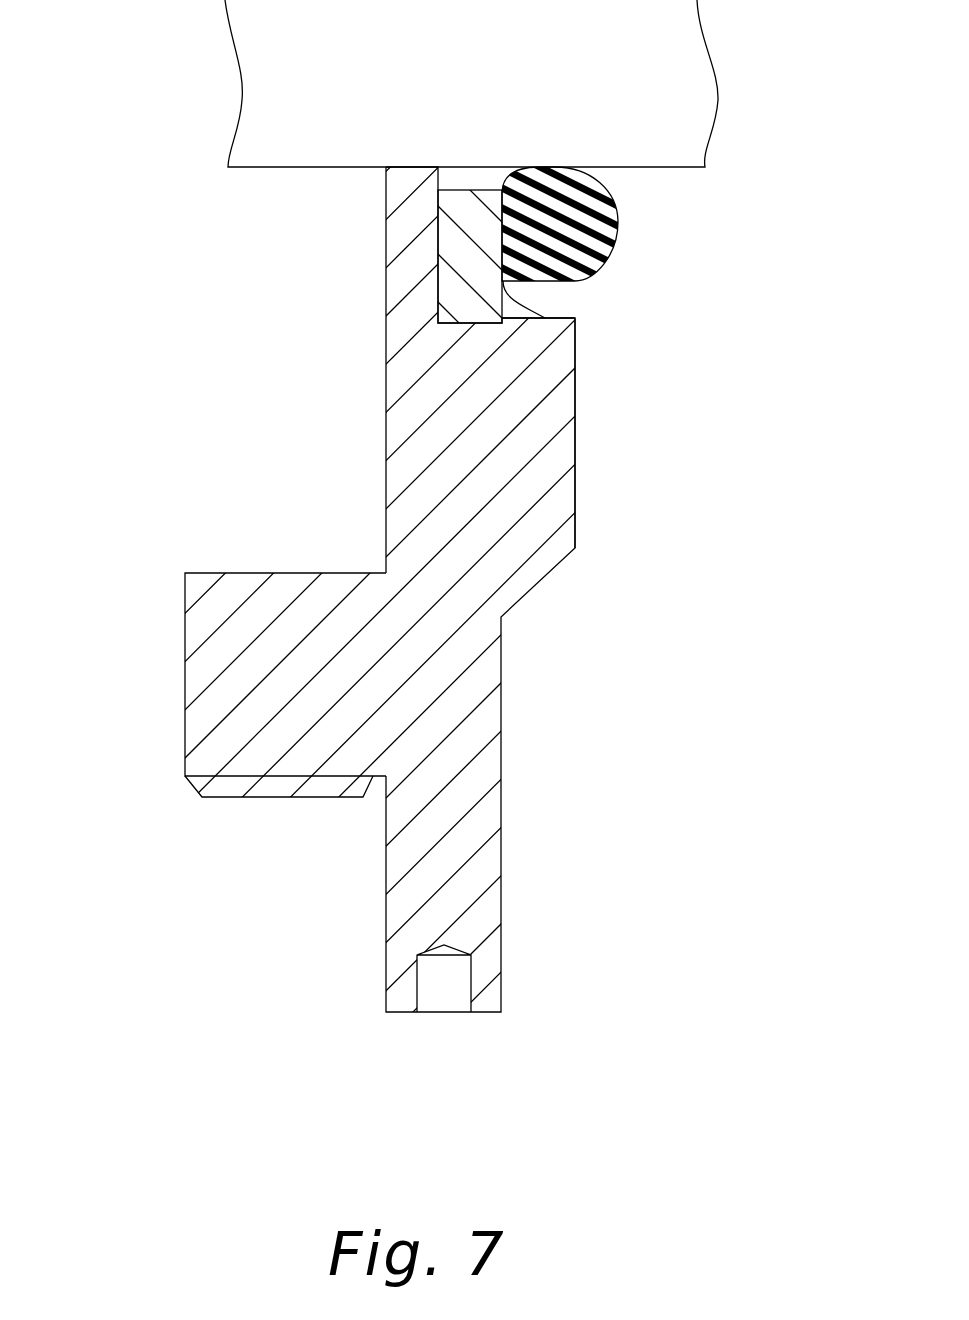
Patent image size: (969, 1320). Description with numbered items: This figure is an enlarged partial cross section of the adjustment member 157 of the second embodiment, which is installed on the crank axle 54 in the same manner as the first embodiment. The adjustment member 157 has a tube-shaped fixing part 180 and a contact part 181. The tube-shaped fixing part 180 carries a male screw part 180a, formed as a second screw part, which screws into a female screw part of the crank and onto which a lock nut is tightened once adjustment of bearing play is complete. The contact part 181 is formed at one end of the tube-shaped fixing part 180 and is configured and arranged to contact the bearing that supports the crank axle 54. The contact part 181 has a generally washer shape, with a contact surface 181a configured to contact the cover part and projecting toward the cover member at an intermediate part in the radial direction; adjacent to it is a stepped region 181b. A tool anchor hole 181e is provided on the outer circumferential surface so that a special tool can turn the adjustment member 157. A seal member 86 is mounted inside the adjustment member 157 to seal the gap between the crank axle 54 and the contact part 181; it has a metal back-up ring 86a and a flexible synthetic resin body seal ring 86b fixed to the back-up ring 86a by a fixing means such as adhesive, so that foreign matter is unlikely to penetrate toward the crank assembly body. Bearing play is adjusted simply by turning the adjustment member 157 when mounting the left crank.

The crank axle 54 is at (663, 160).
The seal member 86 is at (529, 248).
The back-up ring 86a is at (455, 255).
The body seal ring 86b is at (606, 215).
The adjustment member 157 is at (542, 715).
The tube-shaped fixing part 180 is at (196, 750).
The male screw part 180a is at (298, 797).
The contact part 181 is at (512, 677).
The contact surface 181a is at (577, 482).
The shoulder 181b is at (545, 318).
The tool anchor hole 181e is at (471, 995).